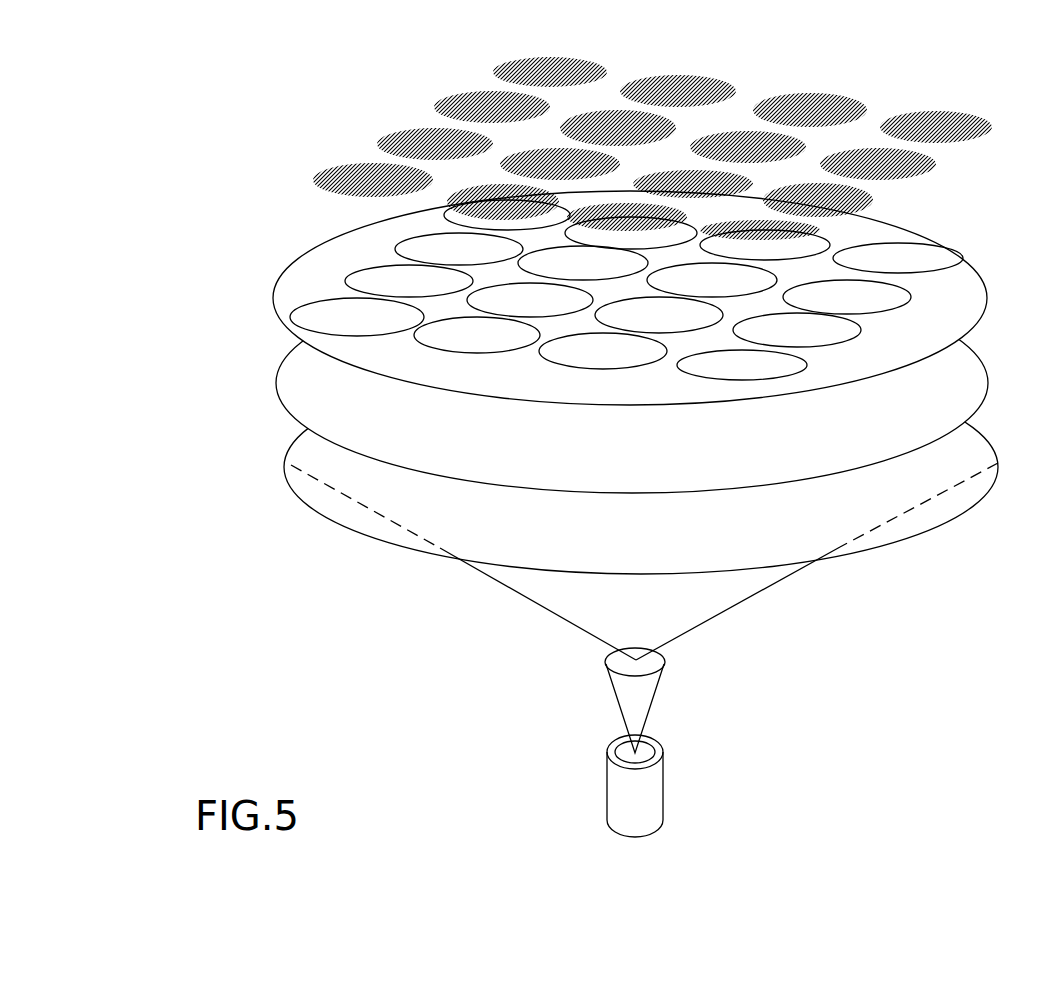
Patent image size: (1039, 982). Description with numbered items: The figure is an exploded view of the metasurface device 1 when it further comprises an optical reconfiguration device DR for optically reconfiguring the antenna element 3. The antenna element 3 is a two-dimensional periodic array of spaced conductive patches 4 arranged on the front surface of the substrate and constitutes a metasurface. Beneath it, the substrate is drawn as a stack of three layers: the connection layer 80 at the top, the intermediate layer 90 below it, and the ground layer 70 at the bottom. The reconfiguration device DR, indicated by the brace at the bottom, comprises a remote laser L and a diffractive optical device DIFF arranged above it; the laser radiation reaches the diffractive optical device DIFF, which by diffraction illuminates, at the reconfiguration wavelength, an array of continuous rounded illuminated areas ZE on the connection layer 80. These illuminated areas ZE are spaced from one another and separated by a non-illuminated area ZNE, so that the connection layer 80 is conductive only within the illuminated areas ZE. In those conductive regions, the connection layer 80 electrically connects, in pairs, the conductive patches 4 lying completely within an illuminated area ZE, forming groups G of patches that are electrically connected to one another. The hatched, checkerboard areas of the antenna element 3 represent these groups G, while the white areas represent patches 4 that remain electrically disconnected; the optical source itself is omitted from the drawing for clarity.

The metasurface device 1 is at (157, 160).
The antenna element 3 is at (473, 90).
The conductive patches 4 is at (407, 133).
The group of conductive patches G is at (333, 175).
The illuminated area ZE is at (352, 278).
The non-illuminated area ZNE is at (428, 318).
The connection layer 80 is at (273, 286).
The intermediate layer 90 is at (277, 383).
The ground layer 70 is at (285, 480).
The optical reconfiguration device DR is at (577, 648).
The diffractive optical device DIFF is at (663, 670).
The remote laser L is at (663, 790).